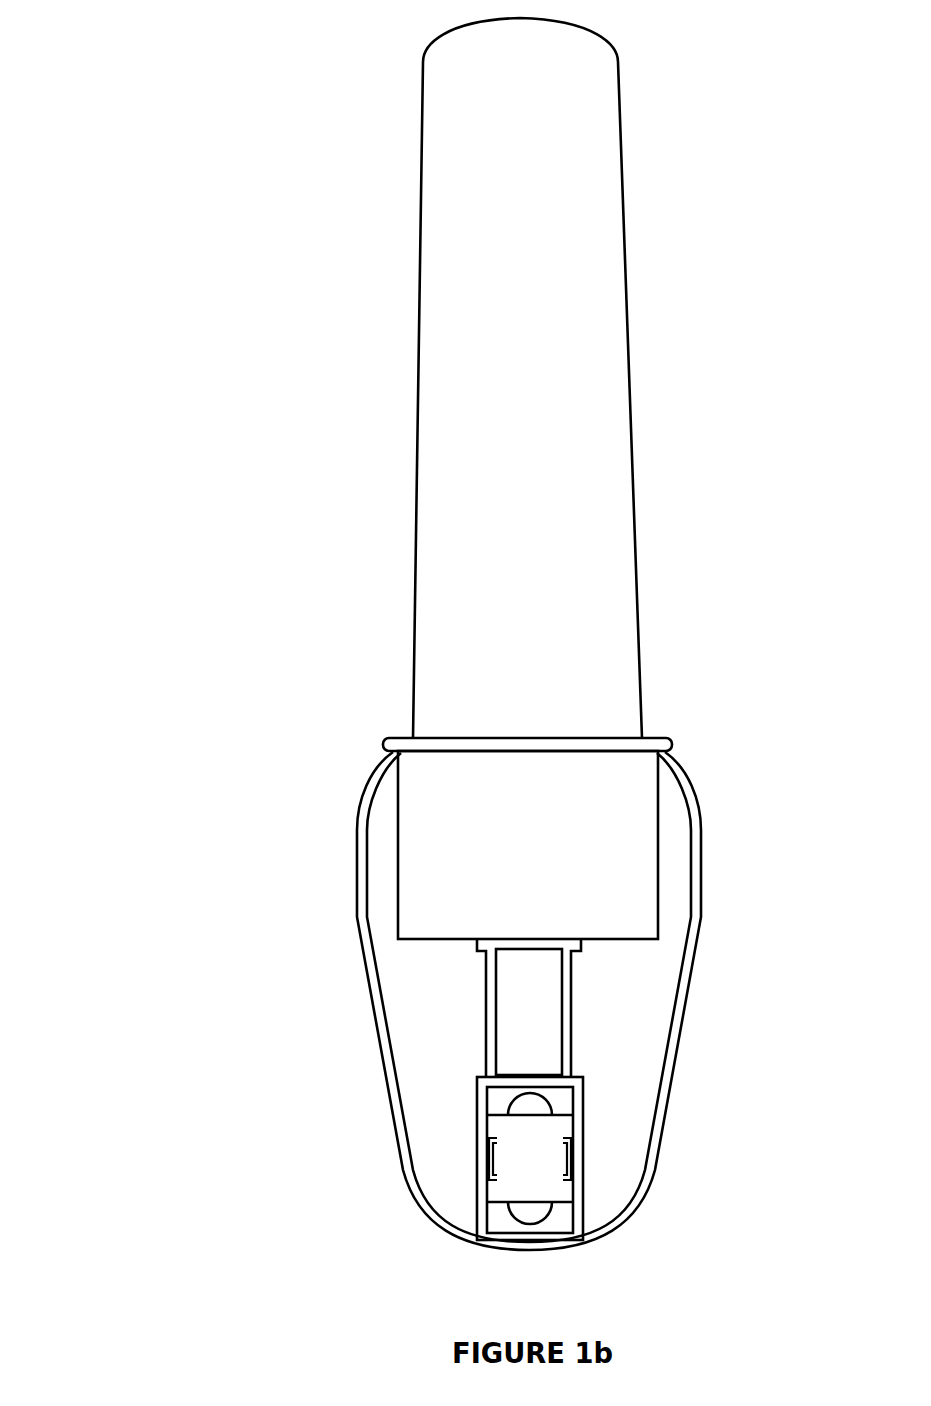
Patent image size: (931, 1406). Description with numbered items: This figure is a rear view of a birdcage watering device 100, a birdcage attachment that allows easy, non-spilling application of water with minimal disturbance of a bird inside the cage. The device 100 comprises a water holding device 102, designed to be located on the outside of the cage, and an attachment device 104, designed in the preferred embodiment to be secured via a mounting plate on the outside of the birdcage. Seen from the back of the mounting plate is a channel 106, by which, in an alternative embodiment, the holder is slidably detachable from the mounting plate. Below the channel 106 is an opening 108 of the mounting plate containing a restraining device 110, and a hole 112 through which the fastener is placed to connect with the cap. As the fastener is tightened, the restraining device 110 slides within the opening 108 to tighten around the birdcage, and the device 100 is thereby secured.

The birdcage watering device 100 is at (431, 662).
The water holding device 102 is at (641, 413).
The attachment device 104 is at (711, 879).
The channel 106 is at (514, 997).
The opening 108 is at (483, 1110).
The restraining device 110 is at (547, 1176).
The hole 112 is at (509, 1220).